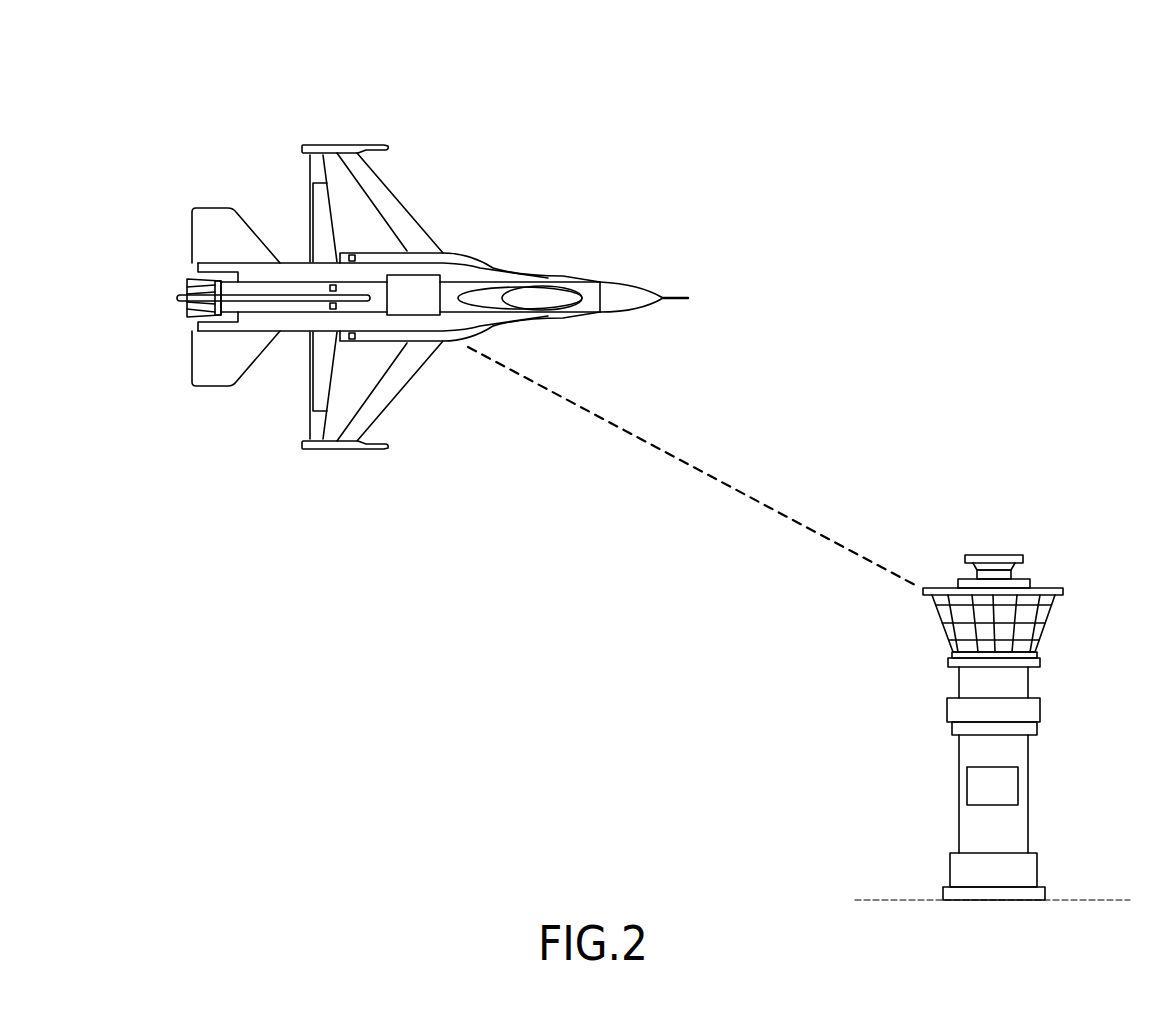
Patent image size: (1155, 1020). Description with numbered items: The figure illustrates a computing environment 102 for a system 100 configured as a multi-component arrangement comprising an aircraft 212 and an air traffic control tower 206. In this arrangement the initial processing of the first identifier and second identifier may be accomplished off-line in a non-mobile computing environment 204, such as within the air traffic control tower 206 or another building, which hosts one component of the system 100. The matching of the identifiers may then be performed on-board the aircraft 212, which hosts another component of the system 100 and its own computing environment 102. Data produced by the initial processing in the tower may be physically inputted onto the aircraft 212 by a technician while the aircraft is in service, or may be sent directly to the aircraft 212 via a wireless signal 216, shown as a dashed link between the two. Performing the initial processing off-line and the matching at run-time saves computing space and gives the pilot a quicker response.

The system 100 is at (432, 307).
The computing environment 102 is at (155, 86).
The non-mobile computing environment 204 is at (992, 696).
The air traffic control tower 206 is at (994, 556).
The aircraft 212 is at (432, 277).
The wireless signal 216 is at (691, 466).